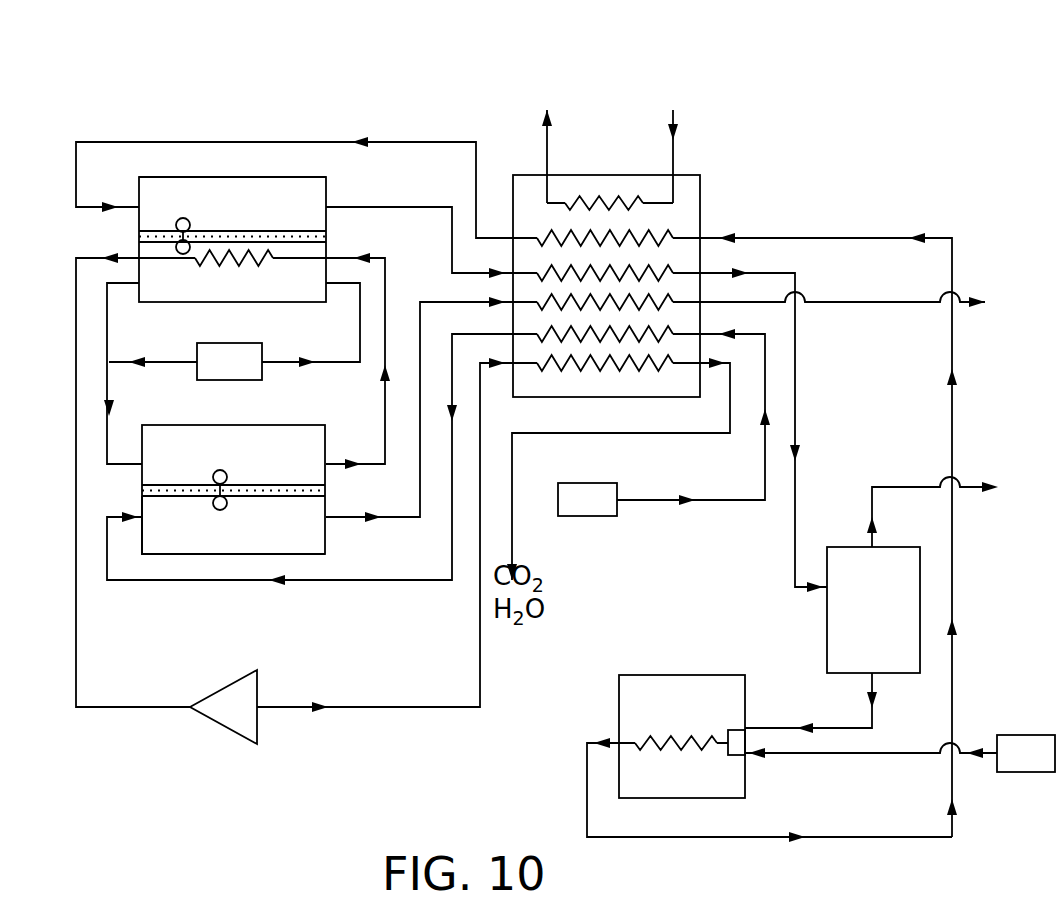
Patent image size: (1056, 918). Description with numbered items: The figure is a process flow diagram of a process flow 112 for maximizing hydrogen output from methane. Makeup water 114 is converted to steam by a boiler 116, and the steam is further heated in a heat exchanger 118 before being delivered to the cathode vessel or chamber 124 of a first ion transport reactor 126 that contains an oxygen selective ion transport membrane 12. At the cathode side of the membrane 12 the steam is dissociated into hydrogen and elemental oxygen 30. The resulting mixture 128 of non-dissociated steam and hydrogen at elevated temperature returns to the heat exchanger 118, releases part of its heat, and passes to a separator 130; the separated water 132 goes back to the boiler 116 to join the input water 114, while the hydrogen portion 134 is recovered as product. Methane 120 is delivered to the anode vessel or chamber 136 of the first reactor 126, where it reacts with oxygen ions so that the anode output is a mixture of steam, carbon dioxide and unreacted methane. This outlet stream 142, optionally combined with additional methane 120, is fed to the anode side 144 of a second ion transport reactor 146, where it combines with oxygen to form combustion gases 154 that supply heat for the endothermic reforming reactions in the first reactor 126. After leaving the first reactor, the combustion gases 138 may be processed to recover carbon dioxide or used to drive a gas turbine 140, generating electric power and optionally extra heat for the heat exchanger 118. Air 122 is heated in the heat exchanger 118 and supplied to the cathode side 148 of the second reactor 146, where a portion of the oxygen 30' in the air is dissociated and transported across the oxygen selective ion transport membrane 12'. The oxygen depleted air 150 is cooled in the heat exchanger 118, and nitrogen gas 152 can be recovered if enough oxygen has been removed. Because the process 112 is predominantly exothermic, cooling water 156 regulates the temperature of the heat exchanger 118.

The process flow 112 is at (418, 78).
The water 114 is at (1025, 773).
The boiler 116 is at (678, 683).
The heat exchanger 118 is at (700, 203).
The methane 120 is at (226, 380).
The air 122 is at (664, 447).
The cathode vessel or chamber 124 is at (198, 197).
The first ion transport reactor 126 is at (271, 165).
The mixture of non-dissociated steam and hydrogen gas 128 is at (390, 207).
The separator 130 is at (873, 610).
The water 132 is at (912, 714).
The hydrogen portion 134 is at (908, 486).
The anode vessel or chamber 136 is at (248, 293).
The combustion gases 138 is at (76, 628).
The gas turbine 140 is at (238, 722).
The outlet stream 142 is at (110, 336).
The anode side 144 is at (295, 485).
The second ion transport reactor 146 is at (176, 403).
The cathode side 148 is at (168, 497).
The oxygen depleted air 150 is at (397, 522).
The nitrogen gas 152 is at (1003, 285).
The combustion gases 154 is at (387, 301).
The cooling water 156 is at (673, 158).
The oxygen selective ion transport membrane 12 is at (270, 230).
The oxygen selective ion transport membrane 12' is at (266, 496).
The elemental oxygen 30 is at (218, 225).
The oxygen 30' is at (256, 510).